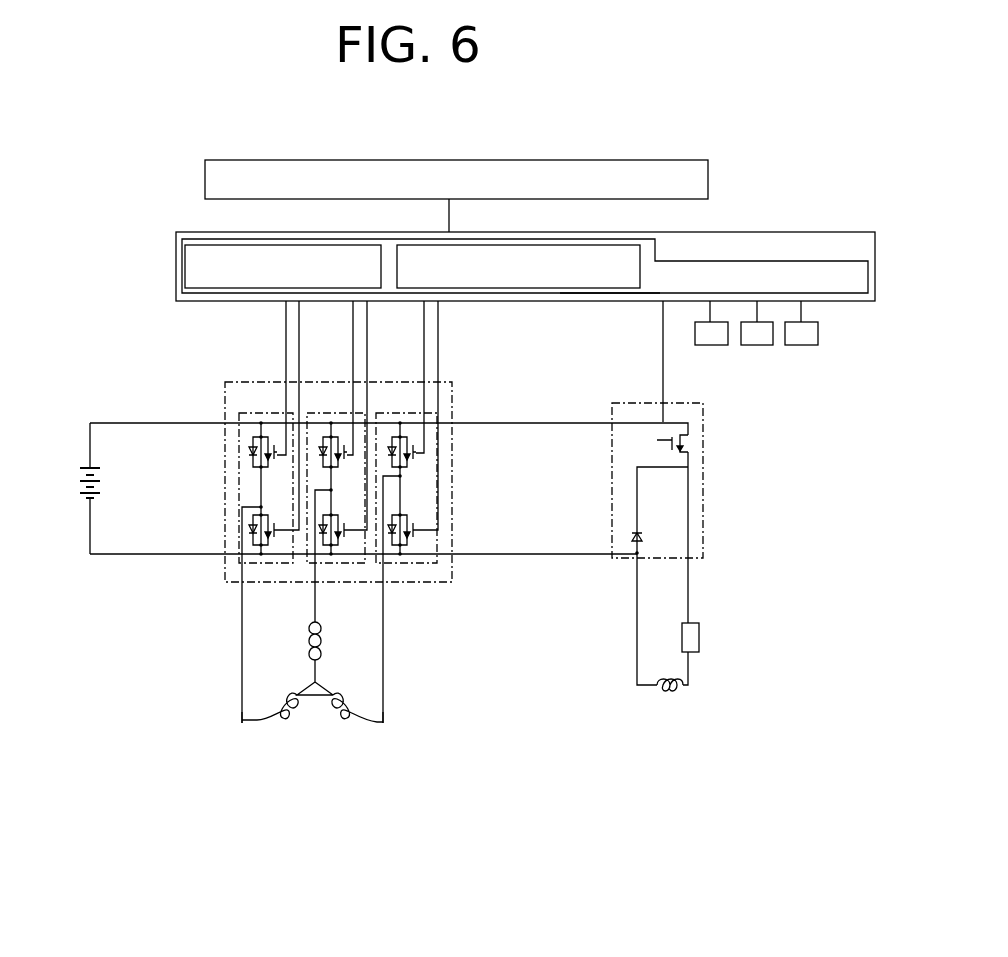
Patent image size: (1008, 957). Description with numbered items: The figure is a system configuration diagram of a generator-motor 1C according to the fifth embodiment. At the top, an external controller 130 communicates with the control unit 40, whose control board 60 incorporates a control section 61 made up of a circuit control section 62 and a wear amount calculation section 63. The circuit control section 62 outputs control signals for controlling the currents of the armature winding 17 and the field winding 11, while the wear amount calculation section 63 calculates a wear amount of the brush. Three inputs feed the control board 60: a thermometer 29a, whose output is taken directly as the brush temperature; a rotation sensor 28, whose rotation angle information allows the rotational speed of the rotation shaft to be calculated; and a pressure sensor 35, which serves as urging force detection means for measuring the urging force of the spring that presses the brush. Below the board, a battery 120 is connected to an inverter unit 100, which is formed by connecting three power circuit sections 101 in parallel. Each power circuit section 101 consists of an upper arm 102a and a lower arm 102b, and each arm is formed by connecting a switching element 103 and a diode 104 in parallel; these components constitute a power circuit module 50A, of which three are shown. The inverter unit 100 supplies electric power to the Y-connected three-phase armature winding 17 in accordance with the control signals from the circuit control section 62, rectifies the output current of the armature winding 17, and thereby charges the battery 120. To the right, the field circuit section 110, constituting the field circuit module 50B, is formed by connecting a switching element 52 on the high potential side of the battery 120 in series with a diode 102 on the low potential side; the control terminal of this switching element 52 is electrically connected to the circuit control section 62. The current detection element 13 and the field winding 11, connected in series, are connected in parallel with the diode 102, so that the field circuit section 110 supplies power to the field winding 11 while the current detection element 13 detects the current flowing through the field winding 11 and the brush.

The generator-motor 1C is at (158, 301).
The external controller 130 is at (602, 158).
The control unit 40 is at (806, 226).
The control board 60 is at (727, 231).
The control section 61 is at (615, 302).
The circuit control section 62 is at (313, 243).
The wear amount calculation section 63 is at (596, 243).
The thermometer 29a is at (705, 342).
The rotation sensor 28 is at (752, 342).
The pressure sensor 35 is at (797, 342).
The battery 120 is at (82, 468).
The inverter unit 100 is at (452, 398).
The power circuit section 101 is at (245, 408).
The upper arm 102a is at (252, 428).
The lower arm 102b is at (248, 519).
The switching element 103 is at (266, 456).
The diode 104 is at (257, 452).
The power circuit module 50A is at (240, 590).
The armature winding 17 is at (270, 723).
The field circuit module 50B is at (617, 560).
The field circuit section 110 is at (654, 439).
The switching element 52 is at (686, 446).
The diode 102 is at (641, 541).
The current detection element 13 is at (700, 645).
The field winding 11 is at (667, 690).